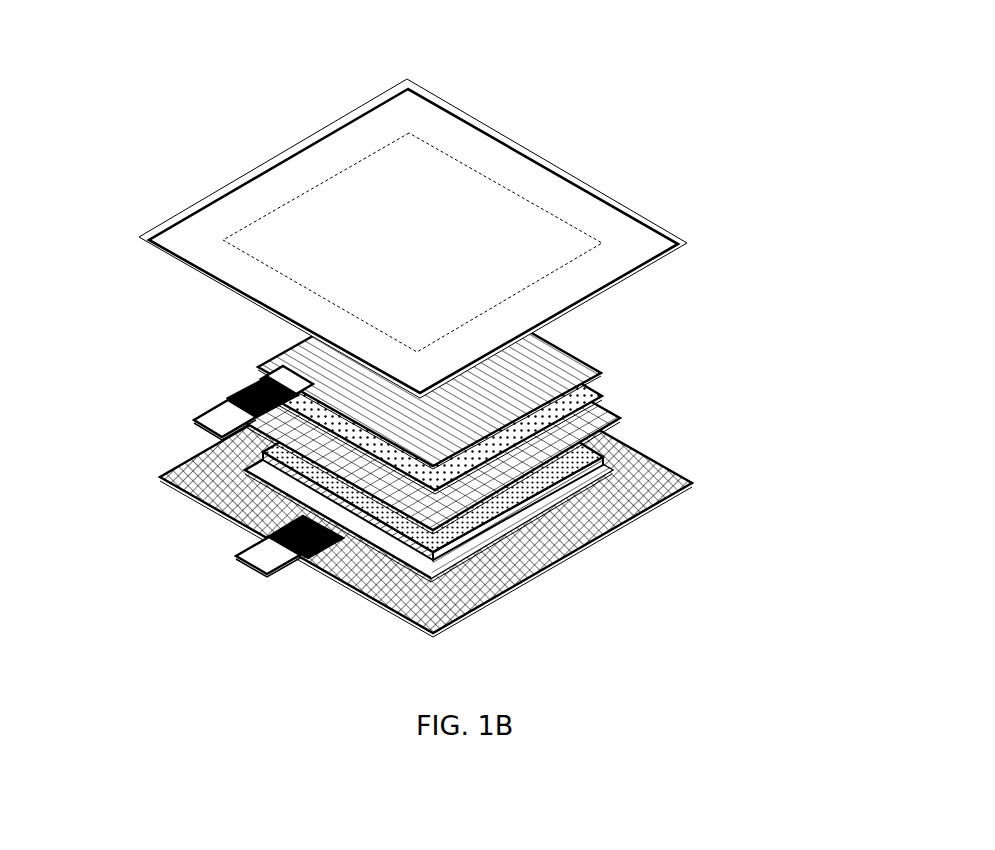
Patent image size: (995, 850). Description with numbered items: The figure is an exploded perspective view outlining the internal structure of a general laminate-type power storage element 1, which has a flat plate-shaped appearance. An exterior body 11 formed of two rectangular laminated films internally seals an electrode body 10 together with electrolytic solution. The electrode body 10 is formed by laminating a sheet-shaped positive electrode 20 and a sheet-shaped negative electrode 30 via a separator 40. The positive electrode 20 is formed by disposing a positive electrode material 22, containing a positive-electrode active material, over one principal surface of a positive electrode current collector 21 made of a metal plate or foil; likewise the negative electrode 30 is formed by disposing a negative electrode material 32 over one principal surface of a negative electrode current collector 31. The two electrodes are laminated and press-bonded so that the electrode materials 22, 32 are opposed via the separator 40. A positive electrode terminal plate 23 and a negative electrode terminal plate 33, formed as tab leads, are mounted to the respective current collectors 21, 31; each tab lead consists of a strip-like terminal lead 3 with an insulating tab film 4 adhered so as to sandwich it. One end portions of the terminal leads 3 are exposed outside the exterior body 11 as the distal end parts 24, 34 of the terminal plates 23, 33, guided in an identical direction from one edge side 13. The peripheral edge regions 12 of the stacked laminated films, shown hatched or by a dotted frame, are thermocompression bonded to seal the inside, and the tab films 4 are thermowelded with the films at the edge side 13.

The laminate-type power storage element 1 is at (585, 82).
The terminal lead 3 is at (220, 427).
The tab film 4 is at (252, 416).
The electrode body 10 is at (812, 330).
The exterior body 11 is at (450, 385).
The peripheral edge region 12 is at (572, 202).
The edge side 13 is at (262, 310).
The positive electrode 20 is at (770, 310).
The positive electrode current collector 21 is at (567, 367).
The positive electrode material 22 is at (592, 395).
The positive electrode terminal plate 23 is at (219, 467).
The distal end part of positive electrode terminal plate 24 is at (197, 421).
The negative electrode 30 is at (773, 383).
The negative electrode current collector 31 is at (612, 472).
The negative electrode material 32 is at (605, 455).
The negative electrode terminal plate 33 is at (240, 680).
The distal end part of negative electrode terminal plate 34 is at (237, 557).
The separator 40 is at (605, 417).